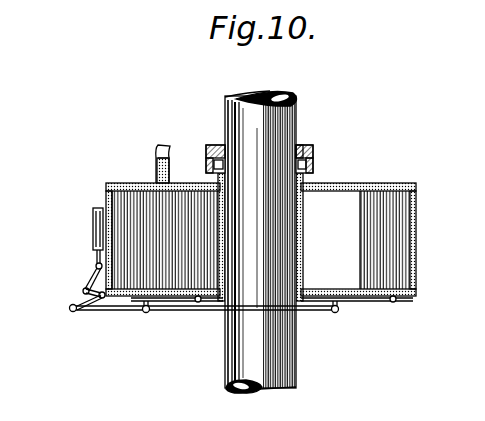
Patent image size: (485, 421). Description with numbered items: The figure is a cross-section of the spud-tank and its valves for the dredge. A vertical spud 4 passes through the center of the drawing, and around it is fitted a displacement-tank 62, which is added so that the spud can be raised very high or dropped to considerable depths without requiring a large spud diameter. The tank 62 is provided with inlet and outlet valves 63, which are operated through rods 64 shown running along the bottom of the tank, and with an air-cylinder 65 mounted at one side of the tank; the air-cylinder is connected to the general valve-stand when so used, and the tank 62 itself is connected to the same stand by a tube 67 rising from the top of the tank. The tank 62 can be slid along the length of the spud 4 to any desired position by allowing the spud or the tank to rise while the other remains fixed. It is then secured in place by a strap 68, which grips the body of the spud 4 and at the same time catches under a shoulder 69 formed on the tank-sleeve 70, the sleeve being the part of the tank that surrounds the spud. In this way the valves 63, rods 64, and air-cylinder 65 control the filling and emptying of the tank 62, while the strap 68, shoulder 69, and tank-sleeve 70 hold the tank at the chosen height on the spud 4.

The spud 4 is at (252, 280).
The displacement-tank 62 is at (261, 239).
The inlet and outlet valves 63 is at (176, 295).
The rods 64 is at (127, 304).
The air-cylinder 65 is at (85, 216).
The tube 67 is at (149, 137).
The strap 68 is at (292, 136).
The shoulder 69 is at (198, 155).
The tank-sleeve 70 is at (303, 262).